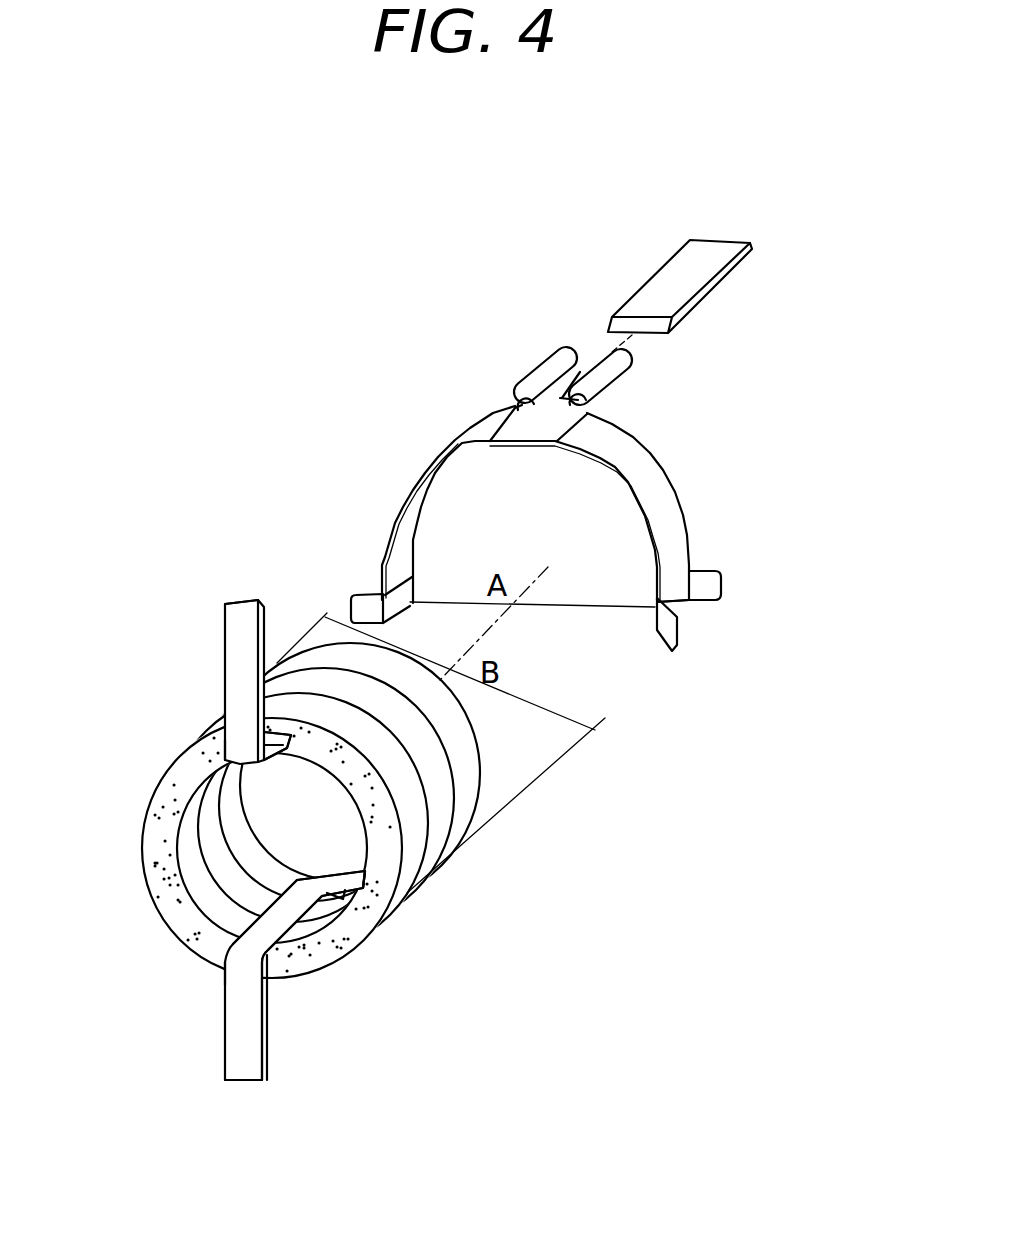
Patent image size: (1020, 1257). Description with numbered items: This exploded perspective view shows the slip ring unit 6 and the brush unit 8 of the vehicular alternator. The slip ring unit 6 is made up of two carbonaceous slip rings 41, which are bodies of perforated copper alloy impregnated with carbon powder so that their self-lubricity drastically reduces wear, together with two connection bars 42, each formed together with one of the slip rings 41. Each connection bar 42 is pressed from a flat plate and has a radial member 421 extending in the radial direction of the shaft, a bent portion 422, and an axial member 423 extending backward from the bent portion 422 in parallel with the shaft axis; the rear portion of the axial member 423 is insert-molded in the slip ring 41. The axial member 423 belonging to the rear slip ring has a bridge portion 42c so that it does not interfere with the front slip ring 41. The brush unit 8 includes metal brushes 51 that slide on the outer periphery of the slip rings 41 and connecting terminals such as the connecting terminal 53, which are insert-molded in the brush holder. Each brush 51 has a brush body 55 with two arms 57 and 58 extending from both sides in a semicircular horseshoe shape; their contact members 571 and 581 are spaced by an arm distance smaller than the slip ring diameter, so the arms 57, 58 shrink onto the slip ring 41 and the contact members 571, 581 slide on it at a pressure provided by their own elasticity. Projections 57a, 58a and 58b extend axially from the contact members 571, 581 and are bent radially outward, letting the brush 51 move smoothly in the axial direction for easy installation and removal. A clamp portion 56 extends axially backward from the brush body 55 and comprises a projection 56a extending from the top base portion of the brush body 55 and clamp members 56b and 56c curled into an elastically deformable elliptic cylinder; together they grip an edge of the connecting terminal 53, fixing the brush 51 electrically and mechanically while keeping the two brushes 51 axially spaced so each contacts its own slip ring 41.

The slip ring unit 6 is at (272, 817).
The slip ring 41 is at (452, 860).
The connection bar 42 is at (209, 817).
The radial member 421 is at (233, 623).
The bent portion 422 is at (205, 785).
The axial member 423 is at (277, 735).
The bridge portion 42c is at (300, 960).
The brush unit 8 is at (560, 463).
The brush 51 is at (623, 428).
The connecting terminal 53 is at (712, 255).
The brush body 55 is at (522, 430).
The clamp portion 56 is at (512, 314).
The projection 56a is at (578, 373).
The clamp member 56b is at (543, 377).
The clamp member 56c is at (607, 367).
The arm 57 is at (403, 538).
The projection 57a is at (362, 603).
The contact member 571 is at (410, 582).
The arm 58 is at (723, 579).
The projection 58a is at (663, 630).
The projection 58b is at (713, 583).
The contact member 581 is at (677, 605).